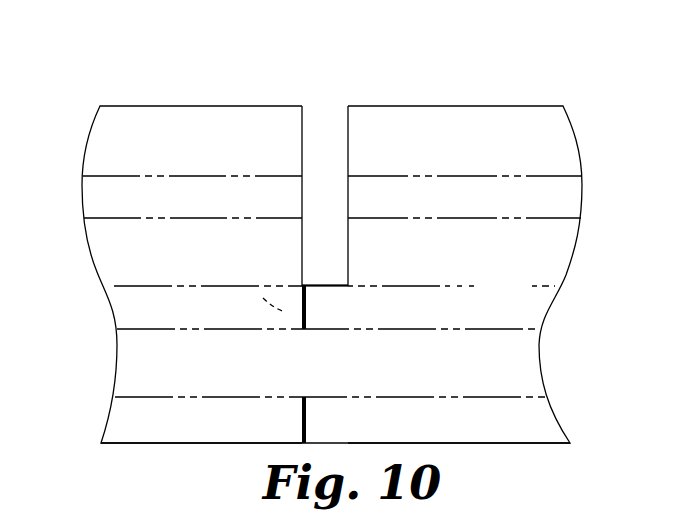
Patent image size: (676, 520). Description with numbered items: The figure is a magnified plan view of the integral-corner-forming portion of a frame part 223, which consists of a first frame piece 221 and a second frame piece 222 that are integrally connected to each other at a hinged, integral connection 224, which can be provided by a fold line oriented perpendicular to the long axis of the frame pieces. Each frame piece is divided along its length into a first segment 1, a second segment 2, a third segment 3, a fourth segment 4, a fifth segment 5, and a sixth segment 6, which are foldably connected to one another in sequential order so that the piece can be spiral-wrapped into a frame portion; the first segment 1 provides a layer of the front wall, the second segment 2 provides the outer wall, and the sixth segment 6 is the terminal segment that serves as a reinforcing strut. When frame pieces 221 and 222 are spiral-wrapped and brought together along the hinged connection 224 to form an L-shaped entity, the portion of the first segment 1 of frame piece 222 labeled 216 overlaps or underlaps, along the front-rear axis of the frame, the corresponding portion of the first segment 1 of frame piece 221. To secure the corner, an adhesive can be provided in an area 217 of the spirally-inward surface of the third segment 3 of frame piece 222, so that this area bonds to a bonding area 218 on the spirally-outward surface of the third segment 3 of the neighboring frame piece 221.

The first segment 1 is at (115, 424).
The second segment 2 is at (127, 368).
The third segment 3 is at (123, 311).
The fourth segment 4 is at (108, 259).
The fifth segment 5 is at (93, 201).
The sixth segment 6 is at (100, 146).
The portion of first segment 216 is at (315, 431).
The adhesive area 217 is at (306, 291).
The bonding area 218 is at (263, 298).
The first frame piece 221 is at (143, 103).
The second frame piece 222 is at (493, 101).
The frame part 223 is at (315, 80).
The hinged integral connection 224 is at (299, 365).